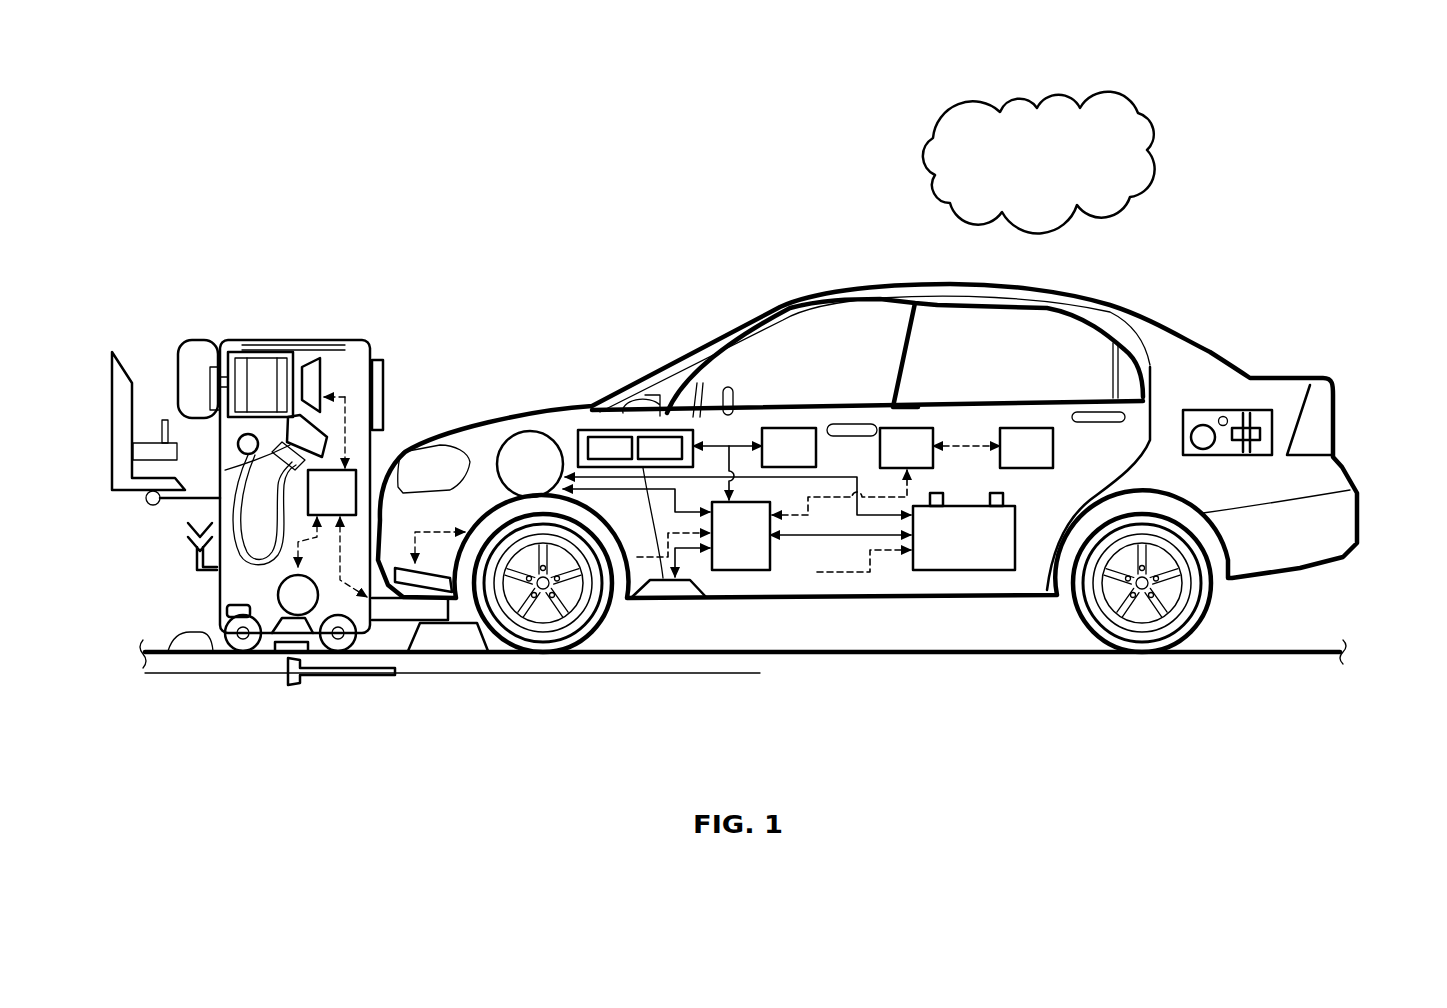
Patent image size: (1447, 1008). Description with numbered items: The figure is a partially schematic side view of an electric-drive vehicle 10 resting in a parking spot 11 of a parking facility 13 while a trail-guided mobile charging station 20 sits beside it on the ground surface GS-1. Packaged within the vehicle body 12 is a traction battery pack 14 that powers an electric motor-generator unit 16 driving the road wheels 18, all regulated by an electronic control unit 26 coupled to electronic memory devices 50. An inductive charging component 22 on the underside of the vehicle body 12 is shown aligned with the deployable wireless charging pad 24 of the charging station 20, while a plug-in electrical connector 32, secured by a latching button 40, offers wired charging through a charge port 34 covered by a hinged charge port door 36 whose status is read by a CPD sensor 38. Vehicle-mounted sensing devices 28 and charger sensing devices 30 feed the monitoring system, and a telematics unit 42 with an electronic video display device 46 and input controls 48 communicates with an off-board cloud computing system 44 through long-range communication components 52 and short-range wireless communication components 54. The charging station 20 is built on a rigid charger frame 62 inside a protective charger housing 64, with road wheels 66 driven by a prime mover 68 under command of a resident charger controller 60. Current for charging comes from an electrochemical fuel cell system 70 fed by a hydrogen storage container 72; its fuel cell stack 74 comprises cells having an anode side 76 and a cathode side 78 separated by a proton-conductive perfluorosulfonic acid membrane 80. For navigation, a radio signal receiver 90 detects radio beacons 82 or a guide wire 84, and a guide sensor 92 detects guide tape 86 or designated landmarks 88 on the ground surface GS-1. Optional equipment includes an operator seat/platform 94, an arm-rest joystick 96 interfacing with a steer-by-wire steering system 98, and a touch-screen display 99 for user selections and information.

The electric-drive vehicle 10 is at (693, 250).
The parking spot 11 is at (492, 205).
The vehicle body 12 is at (835, 288).
The parking facility 13 is at (1345, 593).
The traction battery pack 14 is at (990, 572).
The electric motor-generator unit 16 is at (512, 432).
The road wheels 18 is at (543, 655).
The mobile charging station 20 is at (274, 483).
The inductive charging component 22 is at (407, 563).
The deployable wireless charging pad 24 is at (410, 622).
The electronic control unit 26 is at (781, 511).
The vehicle-mounted sensing devices 28 is at (668, 600).
The charger sensing devices 30 is at (304, 358).
The electrical connector 32 is at (240, 468).
The charge port 34 is at (1218, 380).
The charge port door 36 is at (1250, 408).
The CPD sensor 38 is at (1210, 408).
The latching button 40 is at (238, 442).
The telematics unit 42 is at (614, 398).
The cloud computing system 44 is at (1039, 163).
The electronic video display device 46 is at (595, 436).
The input controls 48 is at (657, 436).
The electronic memory devices 50 is at (774, 427).
The long-range communication components 52 is at (908, 427).
The short-range wireless communication components 54 is at (1021, 427).
The charger controller 60 is at (332, 497).
The charger frame 62 is at (330, 345).
The charger housing 64 is at (353, 342).
The road wheels 66 is at (242, 652).
The prime mover 68 is at (271, 656).
The electrochemical fuel cell system 70 is at (218, 312).
The hydrogen storage container 72 is at (178, 366).
The fuel cell stack 74 is at (226, 342).
The anode side 76 is at (238, 346).
The cathode side 78 is at (282, 346).
The proton-conductive perfluorosulfonic acid membrane 80 is at (260, 346).
The radio beacon 82 is at (178, 627).
The guide wire 84 is at (493, 675).
The guide tape 86 is at (278, 656).
The designated landmarks 88 is at (458, 660).
The radio signal receiver 90 is at (196, 557).
The guide sensor 92 is at (285, 617).
The operator seat/platform 94 is at (120, 352).
The joystick 96 is at (154, 420).
The steer-by-wire steering system 98 is at (223, 605).
The touch-screen display 99 is at (383, 374).
The ground surface GS-1 is at (848, 650).